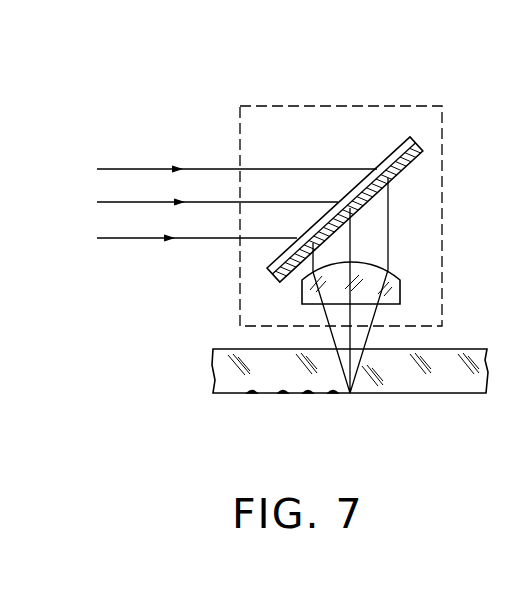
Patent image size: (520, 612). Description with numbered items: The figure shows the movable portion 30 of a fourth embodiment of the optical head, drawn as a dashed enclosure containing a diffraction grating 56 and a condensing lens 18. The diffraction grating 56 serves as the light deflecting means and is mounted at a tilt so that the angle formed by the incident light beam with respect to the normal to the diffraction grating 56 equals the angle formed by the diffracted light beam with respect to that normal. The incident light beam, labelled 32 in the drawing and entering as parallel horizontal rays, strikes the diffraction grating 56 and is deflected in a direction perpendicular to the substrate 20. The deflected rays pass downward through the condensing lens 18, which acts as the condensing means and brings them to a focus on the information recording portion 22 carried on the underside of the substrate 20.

The condensing lens 18 is at (402, 285).
The substrate 20 is at (450, 352).
The information recording portion 22 is at (280, 395).
The movable portion 30 is at (398, 104).
The incident light beam 32 is at (133, 169).
The diffraction grating 56 is at (411, 158).